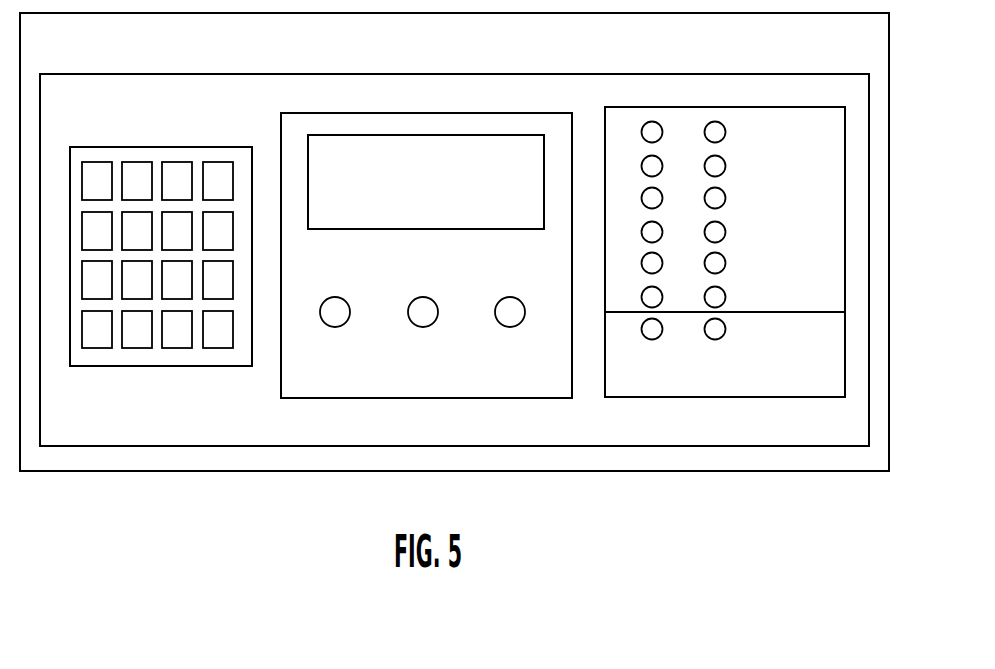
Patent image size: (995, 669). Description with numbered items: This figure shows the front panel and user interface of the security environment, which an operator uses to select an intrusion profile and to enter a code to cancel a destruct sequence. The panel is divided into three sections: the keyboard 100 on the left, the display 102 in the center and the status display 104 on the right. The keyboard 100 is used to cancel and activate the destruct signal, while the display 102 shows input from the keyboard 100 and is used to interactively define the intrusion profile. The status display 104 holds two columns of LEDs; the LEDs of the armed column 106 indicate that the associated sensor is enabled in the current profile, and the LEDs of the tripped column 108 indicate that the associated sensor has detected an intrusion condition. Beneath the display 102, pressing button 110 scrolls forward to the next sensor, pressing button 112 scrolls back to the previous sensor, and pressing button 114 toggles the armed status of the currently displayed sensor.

The keyboard 100 is at (149, 141).
The display 102 is at (426, 219).
The status display 104 is at (739, 217).
The armed column 106 is at (658, 122).
The tripped indicator lights 108 is at (722, 122).
The button 110 is at (513, 297).
The button 112 is at (426, 297).
The button 114 is at (338, 297).